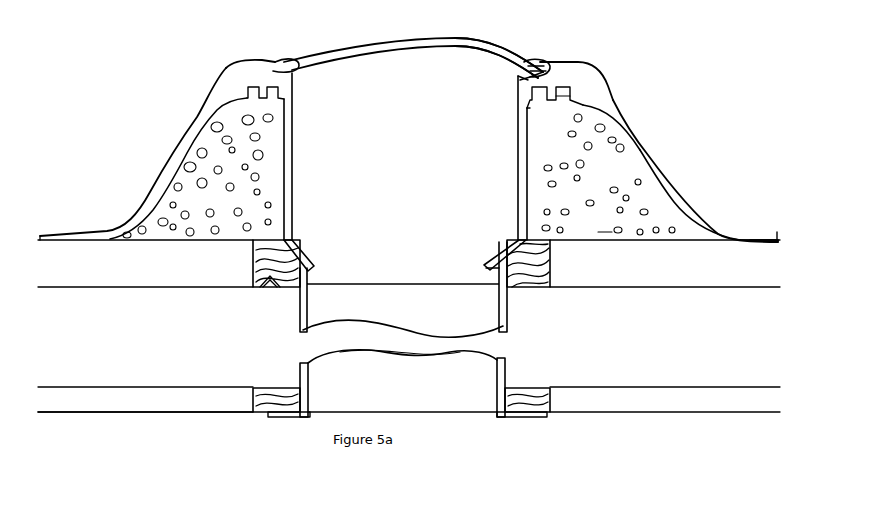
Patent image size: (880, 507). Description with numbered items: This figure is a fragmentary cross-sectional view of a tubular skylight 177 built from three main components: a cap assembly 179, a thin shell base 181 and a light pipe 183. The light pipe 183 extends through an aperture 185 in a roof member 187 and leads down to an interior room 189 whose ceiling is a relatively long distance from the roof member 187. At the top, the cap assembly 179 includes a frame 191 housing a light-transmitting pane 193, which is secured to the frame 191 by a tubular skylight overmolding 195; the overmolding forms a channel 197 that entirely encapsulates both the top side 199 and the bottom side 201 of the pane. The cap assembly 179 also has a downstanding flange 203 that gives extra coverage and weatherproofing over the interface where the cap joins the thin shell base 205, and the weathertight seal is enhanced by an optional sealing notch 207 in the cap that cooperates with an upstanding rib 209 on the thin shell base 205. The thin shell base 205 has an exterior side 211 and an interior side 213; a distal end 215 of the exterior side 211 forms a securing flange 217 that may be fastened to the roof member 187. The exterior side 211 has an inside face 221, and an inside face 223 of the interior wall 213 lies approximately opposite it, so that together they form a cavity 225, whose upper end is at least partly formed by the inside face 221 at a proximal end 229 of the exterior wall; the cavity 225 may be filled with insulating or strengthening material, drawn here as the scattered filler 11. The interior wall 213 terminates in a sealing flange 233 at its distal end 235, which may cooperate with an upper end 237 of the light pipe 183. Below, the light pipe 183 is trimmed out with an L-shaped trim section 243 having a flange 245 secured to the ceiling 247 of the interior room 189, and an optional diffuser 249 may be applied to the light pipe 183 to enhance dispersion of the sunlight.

The foam insulation 11 is at (208, 184).
The tubular skylight 177 is at (316, 48).
The cap assembly 179 is at (242, 78).
The thin shell base 181 is at (181, 146).
The light pipe 183 is at (507, 310).
The aperture 185 is at (412, 272).
The roof member 187 is at (636, 276).
The interior room 189 is at (415, 437).
The frame 191 is at (570, 58).
The light-transmitting pane 193 is at (483, 50).
The tubular skylight overmolding 195 is at (528, 62).
The channel 197 is at (527, 82).
The top side 199 is at (537, 63).
The bottom side 201 is at (531, 76).
The downstanding flange 203 is at (612, 98).
The thin shell base 205 is at (650, 142).
The sealing notch 207 is at (566, 90).
The upstanding rib 209 is at (560, 94).
The exterior side 211 is at (668, 186).
The interior side 213 is at (525, 183).
The distal end 215 is at (770, 237).
The securing flange 217 is at (758, 237).
The inside face 221 is at (652, 170).
The inside face 223 is at (528, 193).
The cavity 225 is at (600, 238).
The proximal end 229 is at (538, 108).
The sealing flange 233 is at (500, 247).
The distal end 235 is at (488, 265).
The upper end 237 is at (498, 275).
The L-shaped trim section 243 is at (310, 391).
The flange 245 is at (288, 416).
The ceiling 247 is at (225, 413).
The diffuser 249 is at (462, 416).